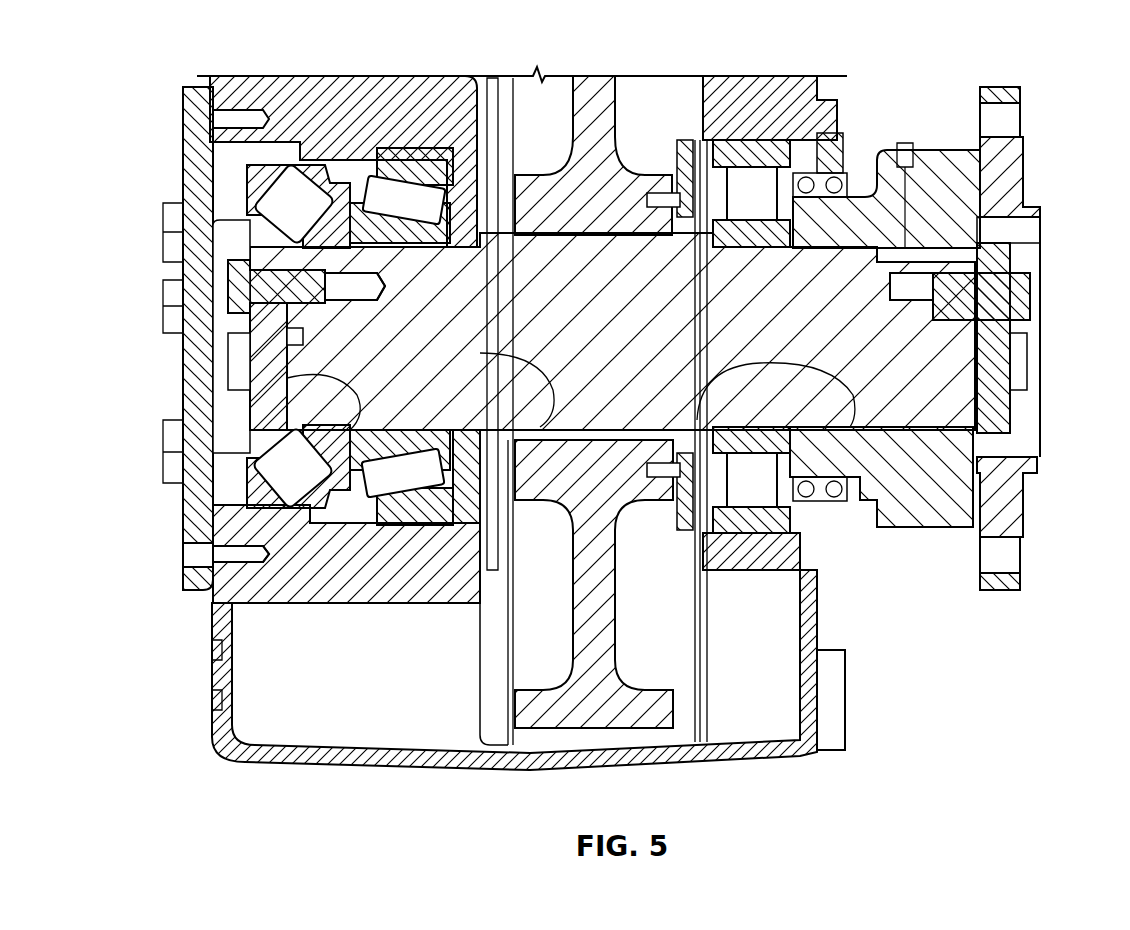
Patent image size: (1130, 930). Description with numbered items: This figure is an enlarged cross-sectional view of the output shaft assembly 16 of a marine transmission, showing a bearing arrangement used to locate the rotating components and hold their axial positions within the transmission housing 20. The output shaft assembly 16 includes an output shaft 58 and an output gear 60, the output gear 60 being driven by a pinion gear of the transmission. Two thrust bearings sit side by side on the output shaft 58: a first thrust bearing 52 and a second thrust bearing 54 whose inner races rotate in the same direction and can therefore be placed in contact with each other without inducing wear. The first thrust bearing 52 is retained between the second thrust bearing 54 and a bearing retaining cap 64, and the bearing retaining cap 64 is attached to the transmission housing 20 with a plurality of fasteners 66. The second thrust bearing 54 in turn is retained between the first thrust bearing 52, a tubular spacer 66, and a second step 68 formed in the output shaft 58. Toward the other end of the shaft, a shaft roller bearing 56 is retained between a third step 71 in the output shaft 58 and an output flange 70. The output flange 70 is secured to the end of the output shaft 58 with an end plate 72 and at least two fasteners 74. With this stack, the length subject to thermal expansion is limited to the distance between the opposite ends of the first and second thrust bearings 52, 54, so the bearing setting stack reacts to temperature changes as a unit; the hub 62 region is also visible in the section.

The output shaft assembly 16 is at (876, 102).
The transmission housing 20 is at (238, 596).
The first thrust bearing 52 is at (298, 205).
The second thrust bearing 54 is at (390, 472).
The shaft roller bearing 56 is at (755, 183).
The output shaft 58 is at (938, 400).
The output gear 60 is at (652, 720).
The hub 62 is at (287, 378).
The bearing retaining cap 64 is at (202, 441).
The fasteners 66 is at (235, 285).
The second step 68 is at (390, 350).
The output flange 70 is at (1025, 510).
The third step 71 is at (840, 470).
The end plate 72 is at (1010, 410).
The fasteners 74 is at (1025, 280).